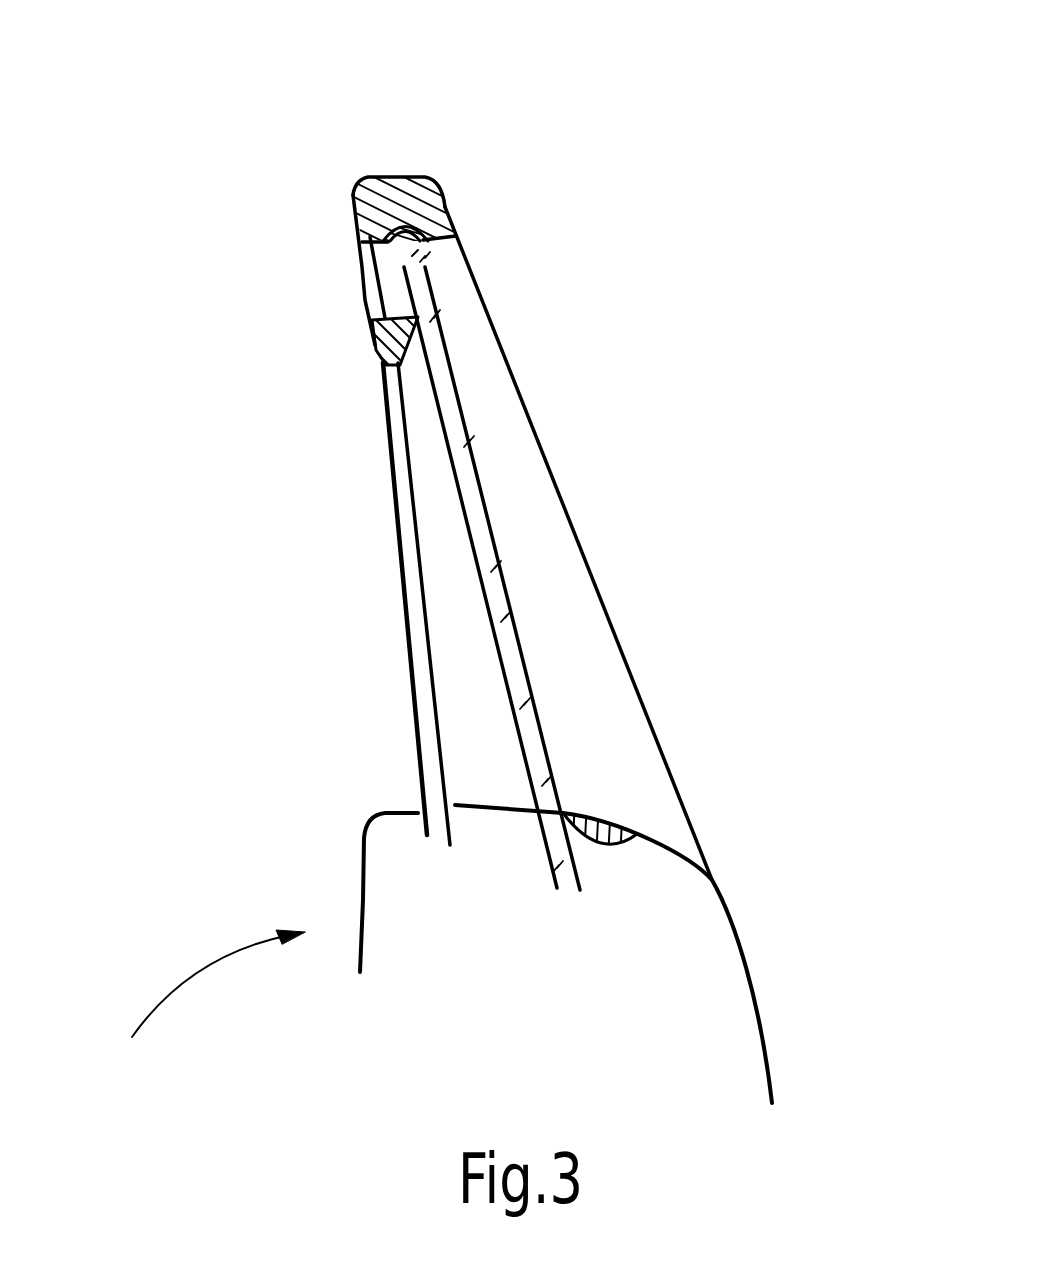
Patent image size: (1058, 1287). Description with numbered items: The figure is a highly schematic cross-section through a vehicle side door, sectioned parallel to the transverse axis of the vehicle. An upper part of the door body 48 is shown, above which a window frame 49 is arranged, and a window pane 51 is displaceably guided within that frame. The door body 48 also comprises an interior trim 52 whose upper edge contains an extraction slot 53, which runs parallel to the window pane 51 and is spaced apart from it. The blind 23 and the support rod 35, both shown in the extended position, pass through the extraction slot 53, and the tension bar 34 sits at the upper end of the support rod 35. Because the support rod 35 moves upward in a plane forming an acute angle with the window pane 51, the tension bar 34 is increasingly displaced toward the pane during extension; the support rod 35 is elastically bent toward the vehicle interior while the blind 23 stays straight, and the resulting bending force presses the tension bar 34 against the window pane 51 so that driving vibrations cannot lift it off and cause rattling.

The window frame 49 is at (418, 177).
The tension bar 34 is at (370, 345).
The support rod 35 is at (410, 660).
The blind 23 is at (443, 767).
The window pane 51 is at (493, 577).
The interior trim 52 is at (365, 838).
The extraction slot 53 is at (473, 810).
The door body 48 is at (211, 1002).